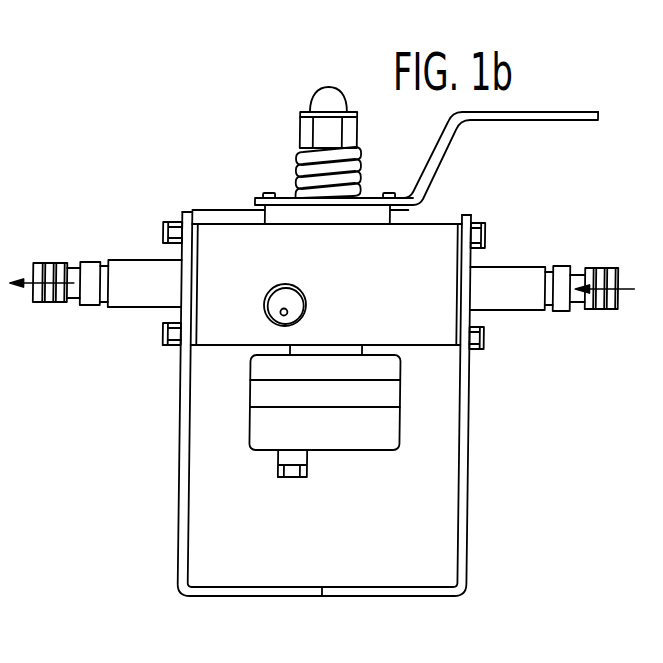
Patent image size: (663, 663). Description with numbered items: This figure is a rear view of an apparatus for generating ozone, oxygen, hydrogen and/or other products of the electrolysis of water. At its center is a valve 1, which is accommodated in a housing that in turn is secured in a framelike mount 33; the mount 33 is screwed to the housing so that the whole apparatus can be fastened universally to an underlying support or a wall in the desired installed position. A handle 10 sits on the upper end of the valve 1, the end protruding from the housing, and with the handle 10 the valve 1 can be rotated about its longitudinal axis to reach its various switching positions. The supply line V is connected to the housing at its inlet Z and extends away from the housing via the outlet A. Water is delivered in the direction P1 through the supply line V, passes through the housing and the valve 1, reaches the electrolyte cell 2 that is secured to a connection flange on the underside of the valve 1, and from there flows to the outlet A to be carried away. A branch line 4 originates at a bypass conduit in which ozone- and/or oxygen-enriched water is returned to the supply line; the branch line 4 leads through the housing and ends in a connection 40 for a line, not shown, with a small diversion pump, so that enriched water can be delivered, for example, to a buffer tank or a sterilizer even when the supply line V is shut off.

The valve 1 is at (295, 137).
The handle 10 is at (571, 112).
The electrolyte cell 2 is at (268, 423).
The branch line 4 is at (289, 312).
The connection 40 is at (265, 310).
The mount 33 is at (180, 527).
The supply line V is at (140, 243).
The inlet Z is at (518, 283).
The outlet A is at (126, 285).
The direction of water delivery P1 is at (611, 280).